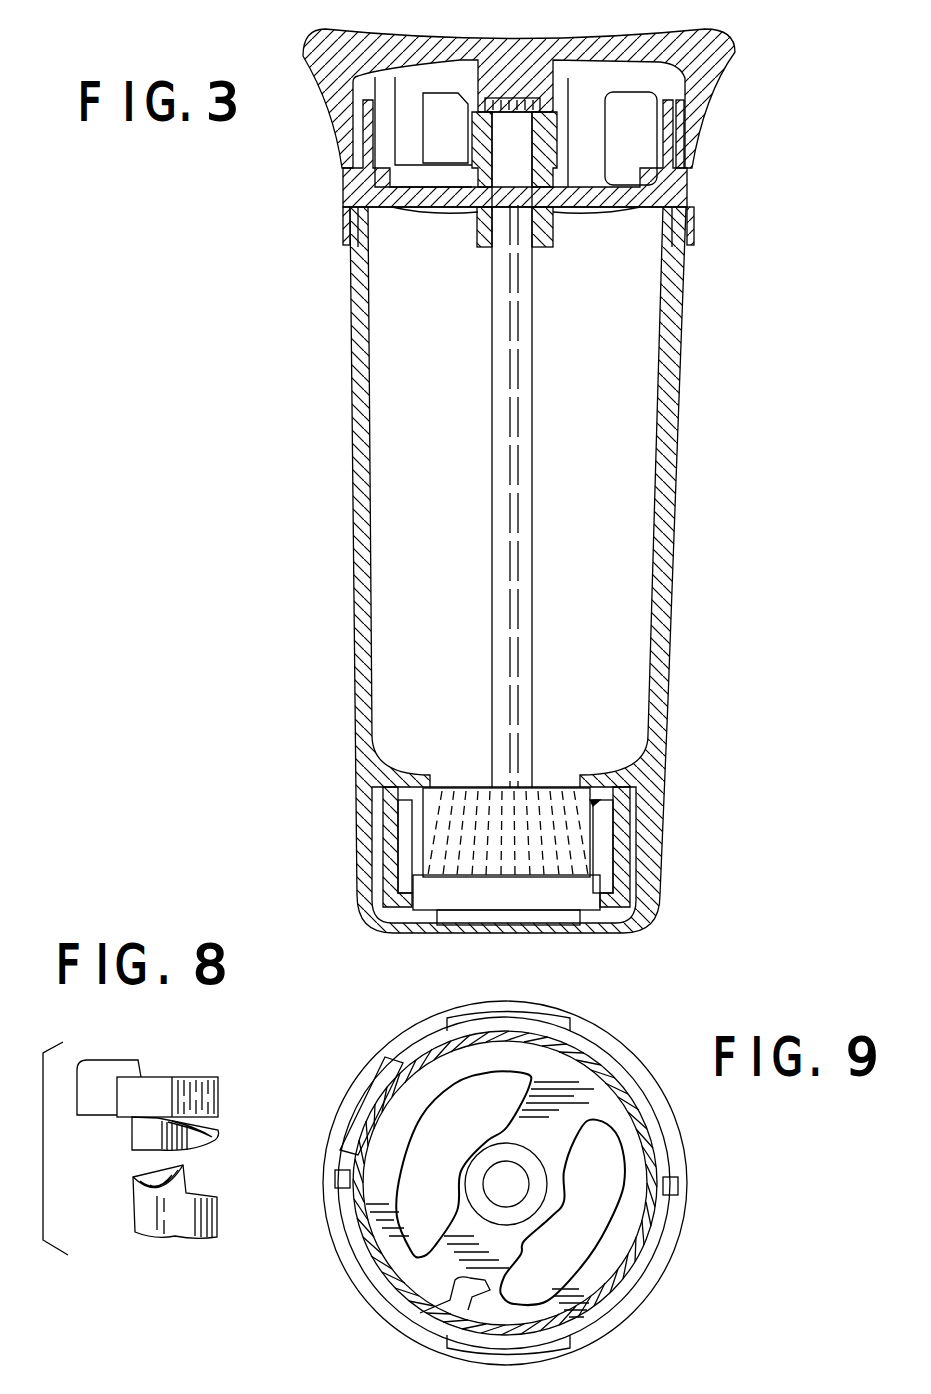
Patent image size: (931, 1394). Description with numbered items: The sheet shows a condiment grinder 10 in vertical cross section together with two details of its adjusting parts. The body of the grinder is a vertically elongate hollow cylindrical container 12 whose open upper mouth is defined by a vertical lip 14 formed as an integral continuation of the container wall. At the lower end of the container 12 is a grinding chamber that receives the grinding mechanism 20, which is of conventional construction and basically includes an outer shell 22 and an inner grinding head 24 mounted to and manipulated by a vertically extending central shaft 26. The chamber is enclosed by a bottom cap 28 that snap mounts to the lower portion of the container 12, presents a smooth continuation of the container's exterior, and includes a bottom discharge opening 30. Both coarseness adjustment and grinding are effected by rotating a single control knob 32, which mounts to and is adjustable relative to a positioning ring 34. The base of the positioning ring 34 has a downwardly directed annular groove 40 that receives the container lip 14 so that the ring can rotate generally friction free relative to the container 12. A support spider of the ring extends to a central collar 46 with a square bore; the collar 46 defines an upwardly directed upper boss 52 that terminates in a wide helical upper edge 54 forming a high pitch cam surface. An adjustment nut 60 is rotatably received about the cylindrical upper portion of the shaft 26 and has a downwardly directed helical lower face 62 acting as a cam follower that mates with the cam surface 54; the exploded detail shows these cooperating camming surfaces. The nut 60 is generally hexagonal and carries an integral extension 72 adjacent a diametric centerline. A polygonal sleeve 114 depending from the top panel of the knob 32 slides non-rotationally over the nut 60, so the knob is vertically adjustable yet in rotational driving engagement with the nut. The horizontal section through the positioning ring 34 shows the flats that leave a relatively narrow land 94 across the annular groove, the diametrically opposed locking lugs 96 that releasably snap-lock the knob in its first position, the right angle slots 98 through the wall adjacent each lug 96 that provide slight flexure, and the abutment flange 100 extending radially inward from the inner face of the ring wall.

In FIG. 3, the condiment grinder 10 is at (338, 298).
In FIG. 3, the container 12 is at (680, 541).
In FIG. 3, the lip 14 is at (667, 215).
In FIG. 3, the grinding mechanism 20 is at (607, 835).
In FIG. 3, the outer shell 22 is at (595, 800).
In FIG. 3, the inner grinding head 24 is at (551, 790).
In FIG. 3, the central shaft 26 is at (533, 368).
In FIG. 3, the bottom cap 28 is at (663, 878).
In FIG. 3, the bottom discharge opening 30 is at (452, 935).
In FIG. 3, the control knob 32 is at (718, 96).
In FIG. 3, the positioning ring 34 is at (700, 186).
In FIG. 3, the annular groove 40 is at (346, 210).
In FIG. 3, the central collar 46 is at (472, 244).
In FIG. 3, the adjustment nut 60 is at (556, 115).
In FIG. 8, the adjustment nut 60 is at (203, 1063).
In FIG. 8, the helical lower face 62 is at (215, 1143).
In FIG. 3, the extension 72 is at (453, 102).
In FIG. 8, the extension 72 is at (98, 1103).
In FIG. 3, the abutment flange 100 is at (641, 146).
In FIG. 3, the sleeve 114 is at (584, 138).
In FIG. 8, the upper boss 52 is at (212, 1215).
In FIG. 8, the helical upper edge 54 is at (133, 1177).
In FIG. 9, the land 94 is at (535, 1026).
In FIG. 9, the locking lug 96 is at (335, 1180).
In FIG. 9, the right angle slot 98 is at (338, 1161).